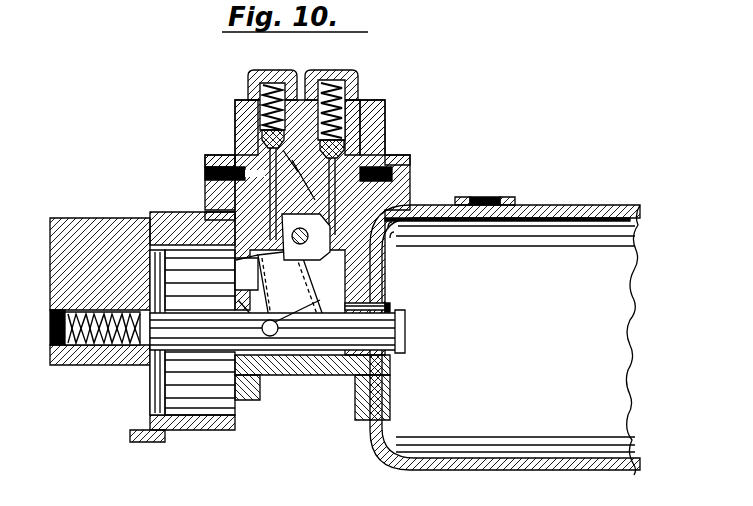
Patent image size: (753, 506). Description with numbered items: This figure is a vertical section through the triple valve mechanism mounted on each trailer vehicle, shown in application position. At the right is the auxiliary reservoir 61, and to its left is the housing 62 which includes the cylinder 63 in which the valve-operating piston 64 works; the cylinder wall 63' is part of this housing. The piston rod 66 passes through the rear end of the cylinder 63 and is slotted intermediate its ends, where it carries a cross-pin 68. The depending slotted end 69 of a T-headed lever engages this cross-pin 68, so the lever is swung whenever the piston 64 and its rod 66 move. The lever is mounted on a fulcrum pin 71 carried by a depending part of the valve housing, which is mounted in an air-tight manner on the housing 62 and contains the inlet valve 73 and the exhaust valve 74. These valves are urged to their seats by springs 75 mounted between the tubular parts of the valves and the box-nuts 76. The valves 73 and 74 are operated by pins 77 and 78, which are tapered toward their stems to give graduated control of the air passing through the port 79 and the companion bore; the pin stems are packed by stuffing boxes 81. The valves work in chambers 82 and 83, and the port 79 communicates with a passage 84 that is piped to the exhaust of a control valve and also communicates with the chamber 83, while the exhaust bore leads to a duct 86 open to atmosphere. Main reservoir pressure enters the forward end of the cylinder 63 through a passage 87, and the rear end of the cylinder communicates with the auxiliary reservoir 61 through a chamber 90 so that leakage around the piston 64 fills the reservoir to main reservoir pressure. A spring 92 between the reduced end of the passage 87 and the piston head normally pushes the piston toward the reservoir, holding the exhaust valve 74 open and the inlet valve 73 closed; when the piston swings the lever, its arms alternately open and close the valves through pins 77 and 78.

The auxiliary reservoir 61 is at (385, 445).
The housing 62 is at (287, 373).
The cylinder 63 is at (145, 331).
The housing wall 63' is at (55, 380).
The valve-operating piston 64 is at (168, 370).
The rod 66 is at (208, 352).
The cross-pin 68 is at (290, 318).
The depending slotted end 69 is at (262, 262).
The fulcrum pin 71 is at (343, 200).
The inlet valve 73 is at (304, 250).
The exhaust valve 74 is at (362, 130).
The springs 75 is at (262, 88).
The box-nuts 76 is at (258, 76).
The pin 77 is at (240, 205).
The pin 78 is at (370, 150).
The port 79 is at (240, 148).
The stuffing boxes 81 is at (255, 212).
The chamber 82 is at (258, 128).
The chamber 83 is at (385, 118).
The passage 84 is at (205, 173).
The duct 86 is at (392, 172).
The passage 87 is at (50, 335).
The chamber 90 is at (336, 358).
The spring 92 is at (98, 366).